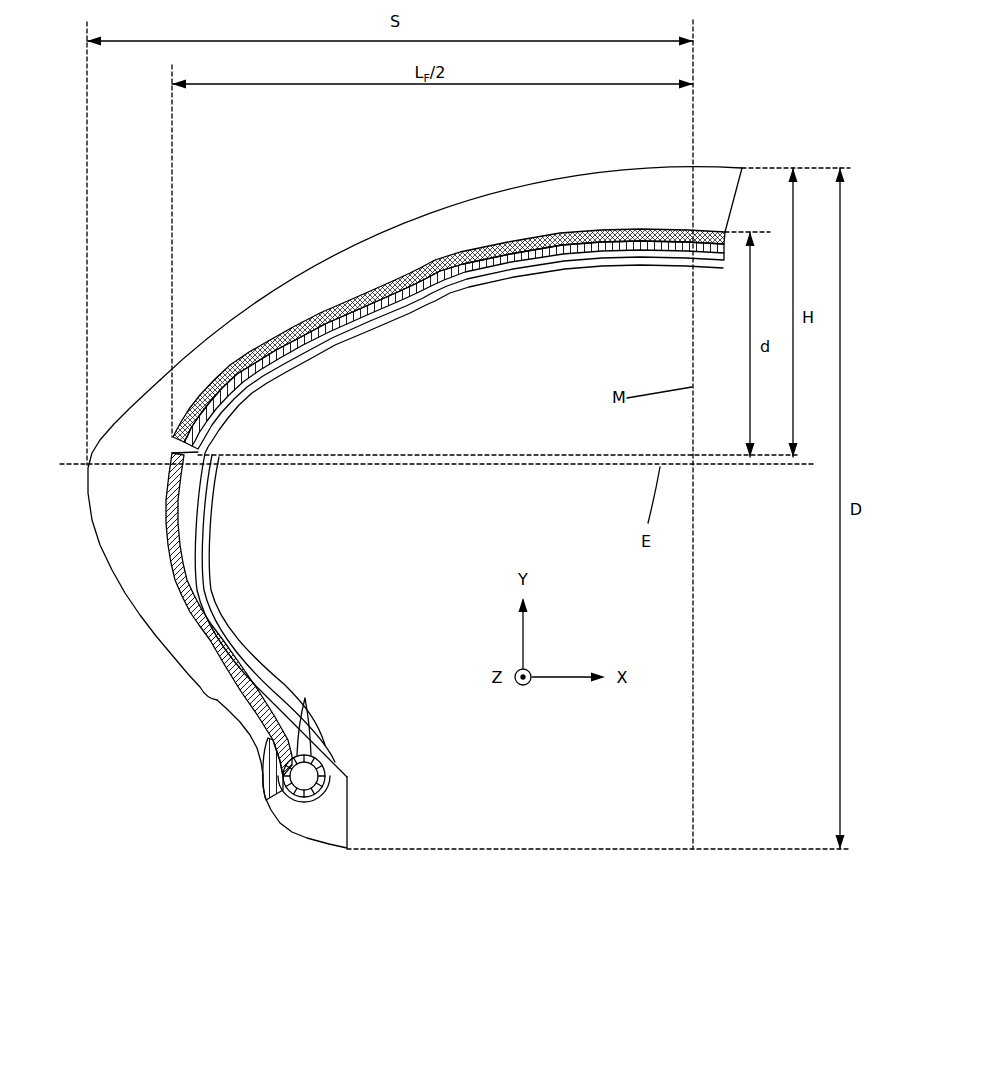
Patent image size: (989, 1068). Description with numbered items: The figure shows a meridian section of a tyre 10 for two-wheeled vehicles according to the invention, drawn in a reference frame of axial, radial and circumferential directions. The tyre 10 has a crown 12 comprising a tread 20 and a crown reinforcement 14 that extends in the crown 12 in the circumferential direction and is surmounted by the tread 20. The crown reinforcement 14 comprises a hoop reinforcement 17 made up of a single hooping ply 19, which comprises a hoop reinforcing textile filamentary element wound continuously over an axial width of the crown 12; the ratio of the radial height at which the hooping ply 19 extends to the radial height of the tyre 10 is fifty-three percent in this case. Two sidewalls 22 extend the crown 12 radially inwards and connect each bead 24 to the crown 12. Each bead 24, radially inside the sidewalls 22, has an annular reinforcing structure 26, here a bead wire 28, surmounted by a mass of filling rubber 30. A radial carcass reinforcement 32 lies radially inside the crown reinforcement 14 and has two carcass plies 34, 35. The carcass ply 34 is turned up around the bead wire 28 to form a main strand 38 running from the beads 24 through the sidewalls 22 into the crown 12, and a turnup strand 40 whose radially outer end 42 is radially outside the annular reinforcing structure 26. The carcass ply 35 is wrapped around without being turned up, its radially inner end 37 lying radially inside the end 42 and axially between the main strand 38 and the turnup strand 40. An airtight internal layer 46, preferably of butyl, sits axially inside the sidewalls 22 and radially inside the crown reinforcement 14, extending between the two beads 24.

The tyre 10 is at (240, 213).
The crown 12 is at (537, 185).
The crown reinforcement 14 is at (583, 190).
The hoop reinforcement 17 is at (394, 278).
The hooping ply 19 is at (342, 303).
The tread 20 is at (437, 207).
The sidewall 22 is at (95, 458).
The bead 24 is at (340, 775).
The annular reinforcing structure 26 is at (312, 799).
The bead wire 28 is at (287, 797).
The mass of filling rubber 30 is at (297, 755).
The radial carcass reinforcement 32 is at (155, 482).
The carcass ply 34 is at (165, 553).
The carcass ply 35 is at (173, 463).
The radially inner end 37 is at (272, 755).
The main strand 38 is at (213, 608).
The turnup strand 40 is at (203, 642).
The radially outer end 42 is at (143, 503).
The airtight internal layer 46 is at (377, 323).